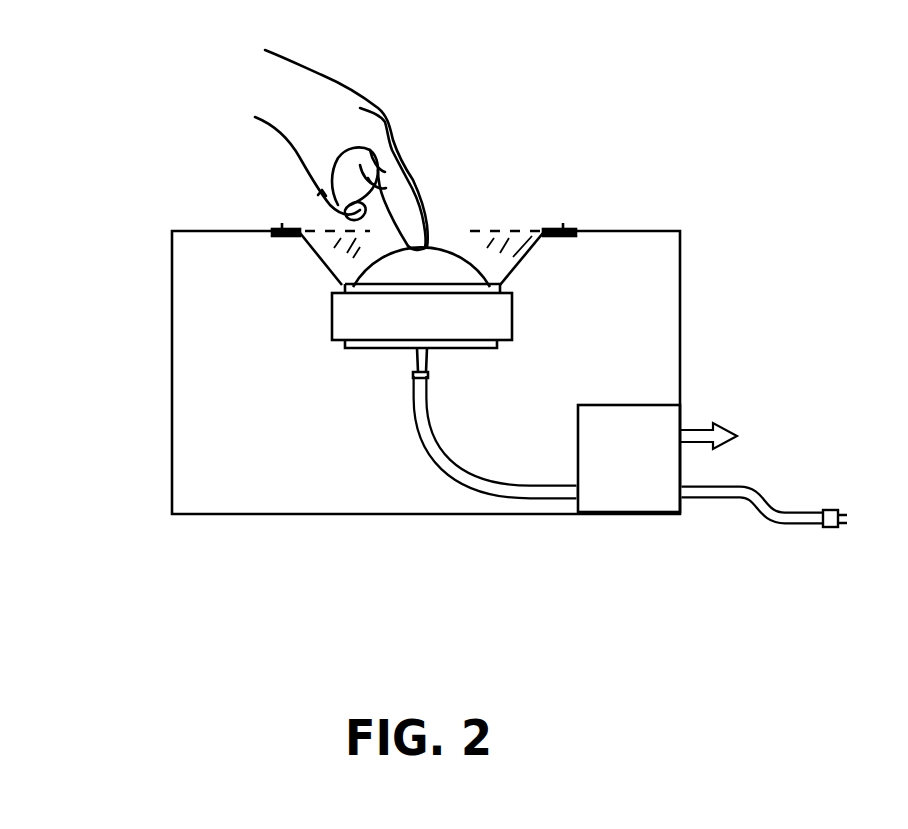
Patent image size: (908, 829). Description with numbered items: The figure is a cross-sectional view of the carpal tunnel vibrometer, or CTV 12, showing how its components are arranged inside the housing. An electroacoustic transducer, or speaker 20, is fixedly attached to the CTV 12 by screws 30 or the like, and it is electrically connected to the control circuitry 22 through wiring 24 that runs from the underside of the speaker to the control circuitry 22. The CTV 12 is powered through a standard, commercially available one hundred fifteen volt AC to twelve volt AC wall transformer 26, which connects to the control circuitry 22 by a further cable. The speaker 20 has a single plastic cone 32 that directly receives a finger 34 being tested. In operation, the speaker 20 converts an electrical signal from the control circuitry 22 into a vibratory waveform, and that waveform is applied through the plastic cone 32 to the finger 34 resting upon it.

The carpal tunnel vibrometer 12 is at (92, 165).
The electroacoustic transducer 20 is at (314, 323).
The control circuitry 22 is at (642, 488).
The wiring 24 is at (413, 395).
The wall transformer 26 is at (827, 528).
The screws 30 is at (282, 237).
The plastic cone 32 is at (453, 252).
The finger 34 is at (420, 203).